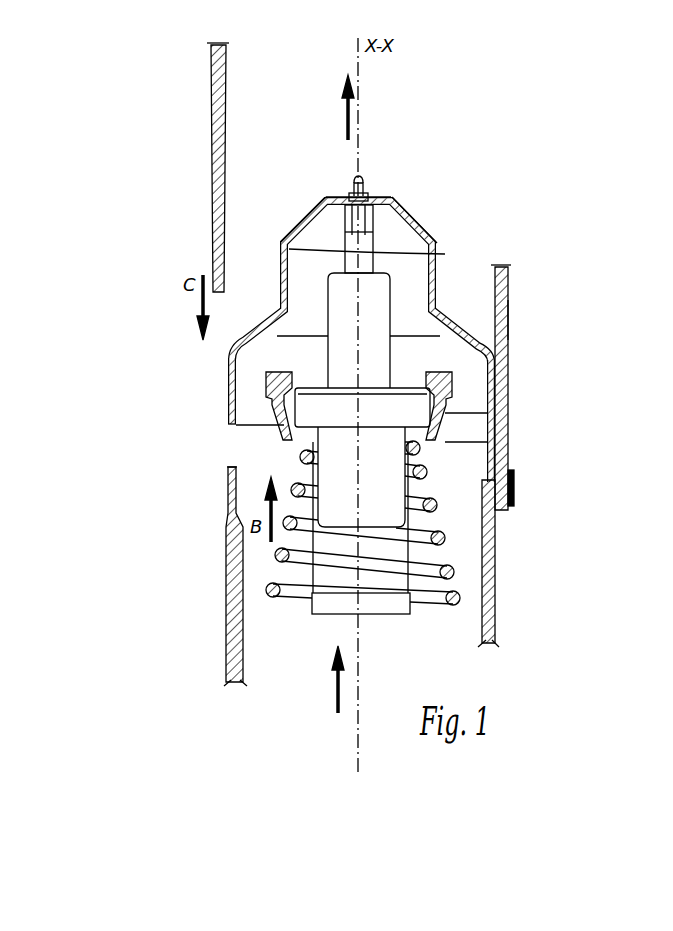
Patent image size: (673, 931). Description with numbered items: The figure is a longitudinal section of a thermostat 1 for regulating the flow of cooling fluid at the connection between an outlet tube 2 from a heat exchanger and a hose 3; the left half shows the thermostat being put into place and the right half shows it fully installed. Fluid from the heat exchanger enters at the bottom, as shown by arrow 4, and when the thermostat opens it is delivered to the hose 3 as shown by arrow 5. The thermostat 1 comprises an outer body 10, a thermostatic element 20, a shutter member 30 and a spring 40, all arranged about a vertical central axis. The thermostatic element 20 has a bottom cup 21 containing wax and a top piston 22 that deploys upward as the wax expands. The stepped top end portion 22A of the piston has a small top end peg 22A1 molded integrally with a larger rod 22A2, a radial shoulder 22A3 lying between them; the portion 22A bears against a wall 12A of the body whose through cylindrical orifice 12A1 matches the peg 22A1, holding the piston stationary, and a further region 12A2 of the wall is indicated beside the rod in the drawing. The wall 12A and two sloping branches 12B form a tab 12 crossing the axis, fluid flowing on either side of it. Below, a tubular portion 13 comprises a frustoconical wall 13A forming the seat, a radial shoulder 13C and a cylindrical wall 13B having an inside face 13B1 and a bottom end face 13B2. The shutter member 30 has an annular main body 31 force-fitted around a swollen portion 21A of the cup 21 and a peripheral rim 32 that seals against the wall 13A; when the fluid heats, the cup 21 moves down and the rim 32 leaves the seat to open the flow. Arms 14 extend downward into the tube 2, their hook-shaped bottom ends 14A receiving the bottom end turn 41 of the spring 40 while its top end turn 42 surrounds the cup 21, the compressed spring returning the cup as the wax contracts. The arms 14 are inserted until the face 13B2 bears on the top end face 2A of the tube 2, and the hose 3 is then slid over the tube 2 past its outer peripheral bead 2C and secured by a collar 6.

The thermostat 1 is at (270, 280).
The outlet tube 2 is at (221, 668).
The top end face of the tube 2A is at (233, 463).
The outer peripheral bead 2C is at (516, 500).
The hose 3 is at (204, 59).
The arrow 4 is at (328, 679).
The arrow 5 is at (341, 107).
The peripheral collar 6 is at (517, 482).
The outer body 10 is at (226, 339).
The tab 12 is at (617, 160).
The wall 12A is at (368, 196).
The through cylindrical orifice 12A1 is at (362, 174).
The valve head inner portion 12A2 is at (377, 216).
The branch 12B is at (448, 252).
The tubular portion 13 is at (645, 290).
The frustoconical wall 13A is at (456, 324).
The cylindrical wall 13B is at (509, 352).
The inside face of the wall 13B1 is at (246, 376).
The bottom end face of the wall 13B2 is at (228, 431).
The radial shoulder 13C is at (509, 330).
The arm 14 is at (441, 553).
The bottom end of the arm 14A is at (380, 604).
The thermostatic element 20 is at (320, 362).
The bottom cup 21 is at (361, 477).
The swollen portion of the cup 21A is at (362, 407).
The top piston 22 is at (345, 231).
The top end portion of the piston 22A is at (115, 86).
The top end peg 22A1 is at (347, 197).
The rod 22A2 is at (318, 214).
The radial shoulder 22A3 is at (342, 192).
The shutter member 30 is at (278, 452).
The annular main body 31 is at (447, 413).
The peripheral rim 32 is at (455, 381).
The spring 40 is at (264, 598).
The bottom end turn 41 is at (455, 606).
The top end turn 42 is at (446, 442).